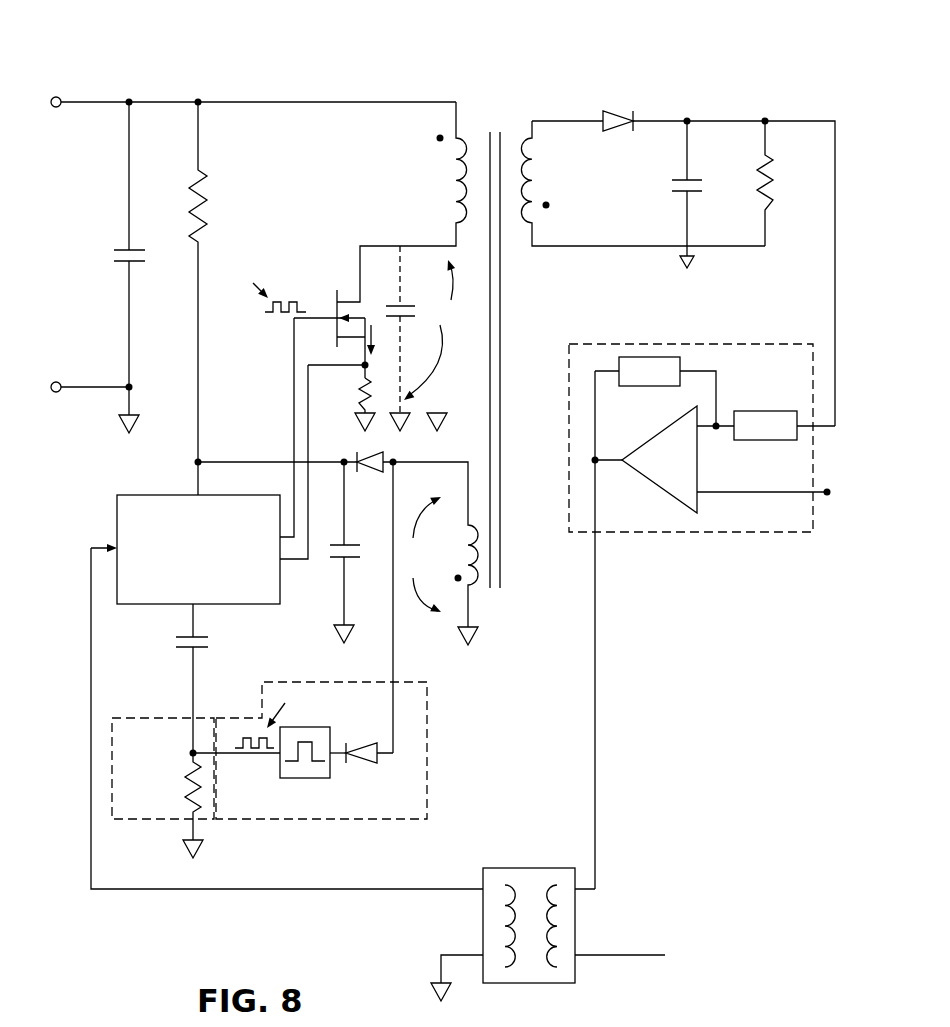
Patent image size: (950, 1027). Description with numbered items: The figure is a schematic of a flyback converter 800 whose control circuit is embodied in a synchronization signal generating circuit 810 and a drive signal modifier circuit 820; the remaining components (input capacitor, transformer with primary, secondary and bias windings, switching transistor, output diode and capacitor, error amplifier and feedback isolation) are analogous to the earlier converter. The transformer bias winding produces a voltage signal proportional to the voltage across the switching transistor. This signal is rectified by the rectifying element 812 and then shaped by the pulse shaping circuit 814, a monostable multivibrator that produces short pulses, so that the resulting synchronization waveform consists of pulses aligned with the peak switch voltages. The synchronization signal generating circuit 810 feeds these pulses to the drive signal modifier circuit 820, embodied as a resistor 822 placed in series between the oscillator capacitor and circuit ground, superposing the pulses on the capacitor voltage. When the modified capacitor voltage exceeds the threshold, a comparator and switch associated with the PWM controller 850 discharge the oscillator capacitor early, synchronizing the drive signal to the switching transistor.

The flyback converter 800 is at (390, 55).
The PWM controller 850 is at (117, 513).
The synchronization signal generating circuit 810 is at (406, 810).
The rectifying element 812 is at (362, 740).
The pulse shaping circuit 814 is at (280, 776).
The drive signal modifier circuit 820 is at (164, 810).
The resistor 822 is at (170, 766).